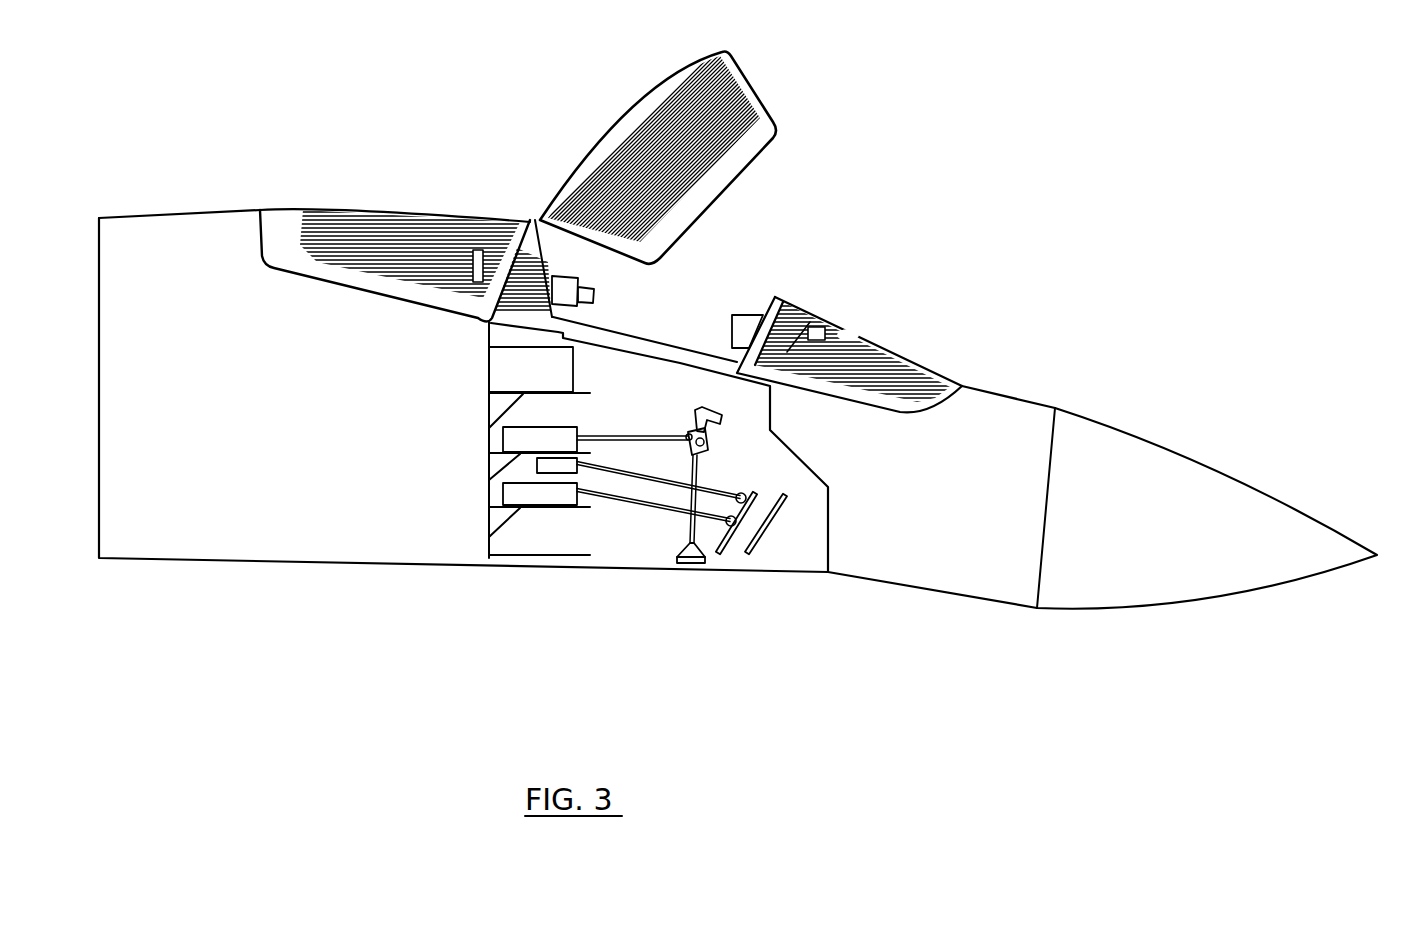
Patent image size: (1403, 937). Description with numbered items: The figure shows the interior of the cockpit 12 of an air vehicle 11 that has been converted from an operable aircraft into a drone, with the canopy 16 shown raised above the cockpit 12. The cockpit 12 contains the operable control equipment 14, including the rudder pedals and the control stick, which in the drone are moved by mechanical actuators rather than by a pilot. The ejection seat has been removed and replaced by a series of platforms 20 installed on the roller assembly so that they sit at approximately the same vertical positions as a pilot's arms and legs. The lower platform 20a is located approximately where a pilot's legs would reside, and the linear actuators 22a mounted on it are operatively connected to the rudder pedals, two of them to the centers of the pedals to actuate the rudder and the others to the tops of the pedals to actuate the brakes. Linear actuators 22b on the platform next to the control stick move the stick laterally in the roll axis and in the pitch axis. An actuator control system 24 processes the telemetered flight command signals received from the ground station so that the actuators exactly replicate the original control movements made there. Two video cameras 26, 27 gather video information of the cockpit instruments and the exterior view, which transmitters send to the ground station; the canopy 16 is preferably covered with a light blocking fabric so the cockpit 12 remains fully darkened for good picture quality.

The air vehicle 11 is at (213, 210).
The cockpit 12 is at (672, 293).
The control equipment 14 is at (680, 563).
The canopy 16 is at (672, 76).
The platforms 20 is at (590, 430).
The lower platform 20a is at (537, 509).
The linear actuators 22a is at (547, 465).
The linear actuators 22b is at (520, 436).
The actuator control system 24 is at (500, 364).
The video camera 26 is at (577, 277).
The video camera 27 is at (731, 324).